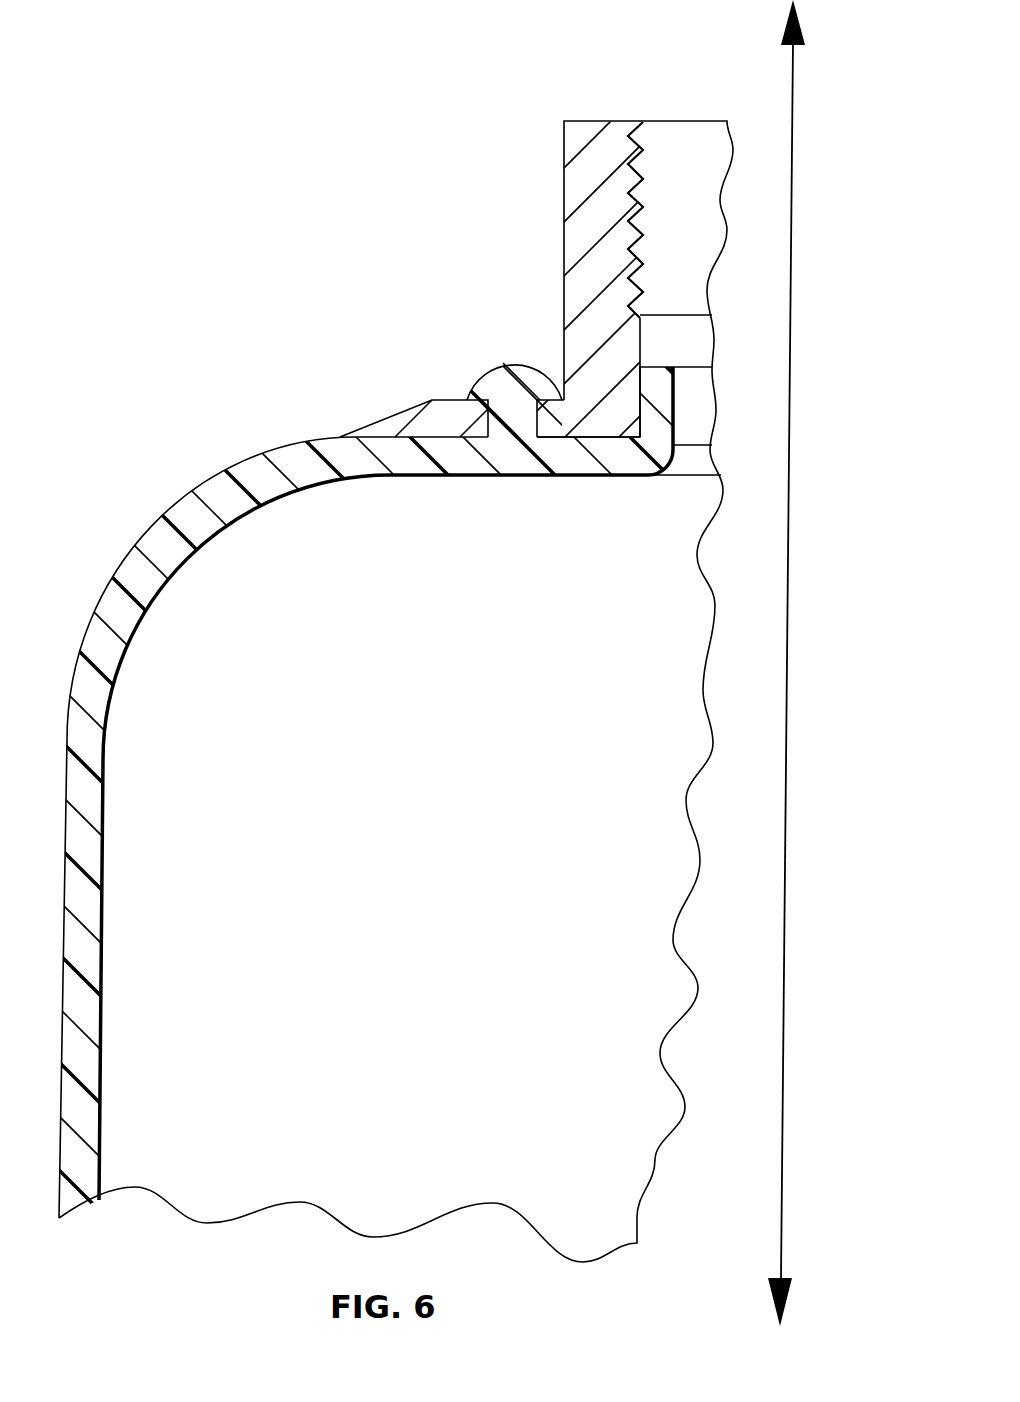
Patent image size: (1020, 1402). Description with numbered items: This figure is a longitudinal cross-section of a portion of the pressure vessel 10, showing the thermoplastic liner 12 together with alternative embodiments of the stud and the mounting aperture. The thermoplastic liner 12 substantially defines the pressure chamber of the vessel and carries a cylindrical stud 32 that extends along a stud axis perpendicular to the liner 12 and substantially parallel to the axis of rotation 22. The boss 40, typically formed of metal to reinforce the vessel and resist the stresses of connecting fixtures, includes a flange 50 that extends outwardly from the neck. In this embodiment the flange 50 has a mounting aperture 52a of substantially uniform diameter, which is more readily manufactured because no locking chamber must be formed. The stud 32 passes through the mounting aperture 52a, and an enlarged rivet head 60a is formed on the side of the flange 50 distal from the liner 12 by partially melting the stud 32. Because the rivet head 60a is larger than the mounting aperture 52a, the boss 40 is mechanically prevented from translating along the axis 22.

The vessel 10 is at (205, 231).
The thermoplastic liner 12 is at (82, 913).
The axis of rotation 22 is at (792, 105).
The cylindrical stud 32 is at (524, 404).
The boss 40 is at (534, 95).
The flange 50 is at (402, 422).
The mounting aperture 52a is at (537, 422).
The enlarged rivet head 60a is at (498, 388).